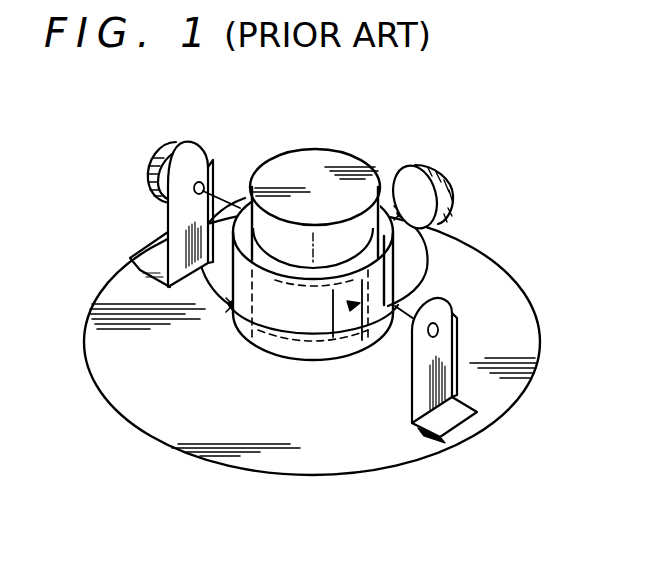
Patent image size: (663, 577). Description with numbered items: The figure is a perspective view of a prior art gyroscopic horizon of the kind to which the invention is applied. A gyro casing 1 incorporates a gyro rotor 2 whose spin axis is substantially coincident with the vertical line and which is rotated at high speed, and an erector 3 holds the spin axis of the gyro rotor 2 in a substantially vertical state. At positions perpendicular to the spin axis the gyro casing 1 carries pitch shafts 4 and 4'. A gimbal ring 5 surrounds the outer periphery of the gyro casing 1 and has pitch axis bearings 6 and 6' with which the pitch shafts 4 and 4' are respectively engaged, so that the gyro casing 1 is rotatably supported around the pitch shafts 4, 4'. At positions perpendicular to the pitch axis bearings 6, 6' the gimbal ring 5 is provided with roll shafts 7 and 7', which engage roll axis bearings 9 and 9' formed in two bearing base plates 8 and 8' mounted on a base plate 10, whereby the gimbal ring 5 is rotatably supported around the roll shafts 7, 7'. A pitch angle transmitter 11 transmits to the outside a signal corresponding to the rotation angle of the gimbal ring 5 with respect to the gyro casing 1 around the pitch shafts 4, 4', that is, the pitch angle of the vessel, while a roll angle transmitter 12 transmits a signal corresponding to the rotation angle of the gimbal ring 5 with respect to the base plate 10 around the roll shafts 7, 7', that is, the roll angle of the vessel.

The gyro casing 1 is at (302, 356).
The gyro rotor 2 is at (381, 340).
The erector 3 is at (338, 165).
The pitch shaft 4 is at (207, 285).
The pitch shaft 4' is at (445, 241).
The gimbal ring 5 is at (430, 255).
The pitch axis bearing 6 is at (223, 341).
The pitch axis bearing 6' is at (393, 173).
The roll shaft 7 is at (435, 372).
The roll shaft 7' is at (194, 199).
The bearing base plate 8 is at (425, 427).
The bearing base plate 8' is at (139, 242).
The roll axis bearing 9 is at (461, 312).
The roll axis bearing 9' is at (217, 160).
The base plate 10 is at (177, 432).
The pitch angle transmitter 11 is at (433, 172).
The roll angle transmitter 12 is at (158, 166).